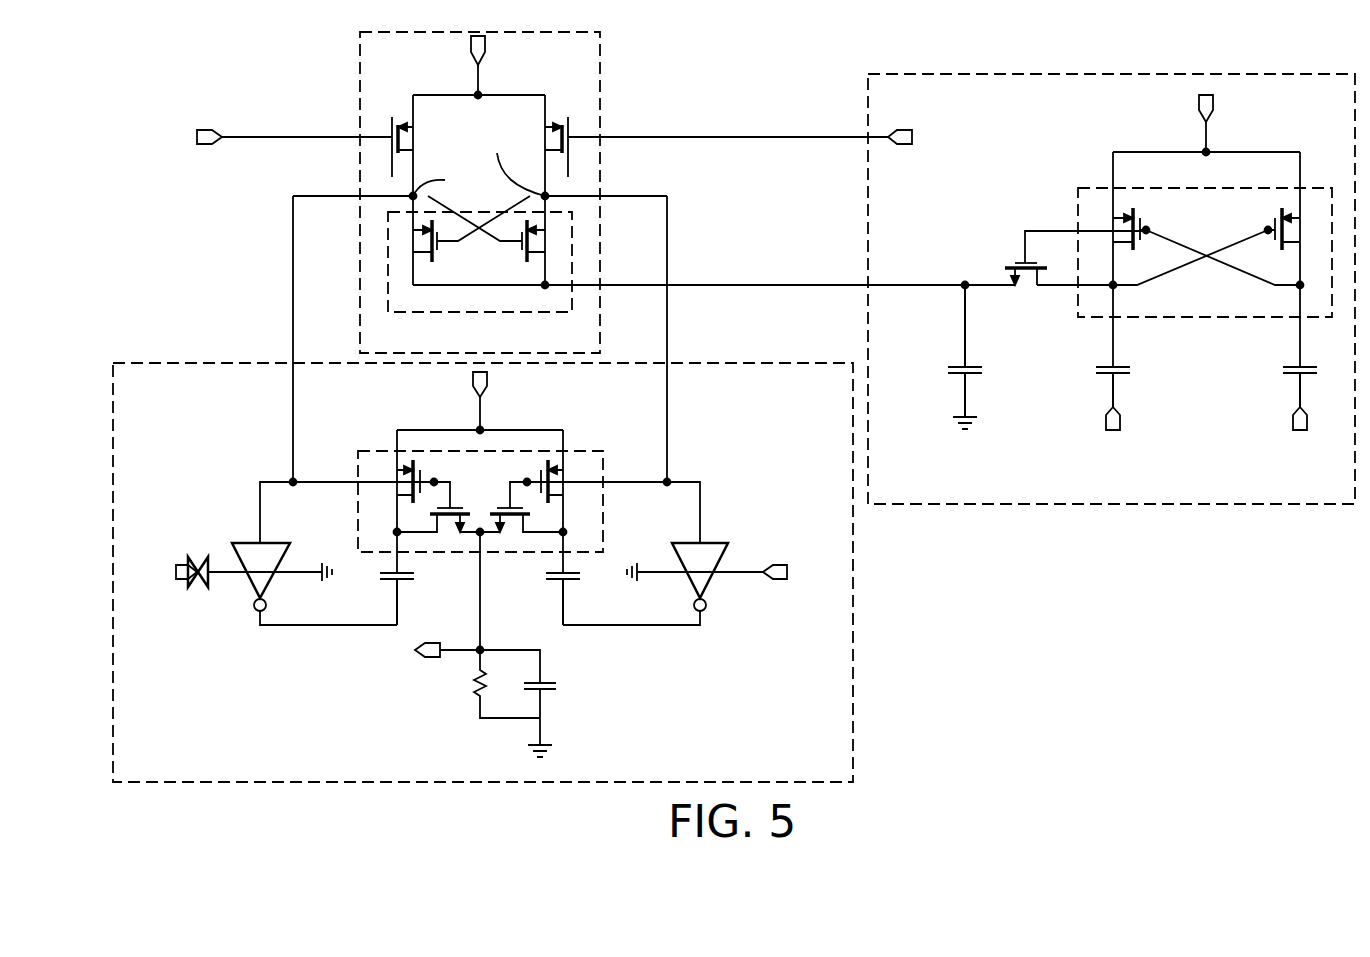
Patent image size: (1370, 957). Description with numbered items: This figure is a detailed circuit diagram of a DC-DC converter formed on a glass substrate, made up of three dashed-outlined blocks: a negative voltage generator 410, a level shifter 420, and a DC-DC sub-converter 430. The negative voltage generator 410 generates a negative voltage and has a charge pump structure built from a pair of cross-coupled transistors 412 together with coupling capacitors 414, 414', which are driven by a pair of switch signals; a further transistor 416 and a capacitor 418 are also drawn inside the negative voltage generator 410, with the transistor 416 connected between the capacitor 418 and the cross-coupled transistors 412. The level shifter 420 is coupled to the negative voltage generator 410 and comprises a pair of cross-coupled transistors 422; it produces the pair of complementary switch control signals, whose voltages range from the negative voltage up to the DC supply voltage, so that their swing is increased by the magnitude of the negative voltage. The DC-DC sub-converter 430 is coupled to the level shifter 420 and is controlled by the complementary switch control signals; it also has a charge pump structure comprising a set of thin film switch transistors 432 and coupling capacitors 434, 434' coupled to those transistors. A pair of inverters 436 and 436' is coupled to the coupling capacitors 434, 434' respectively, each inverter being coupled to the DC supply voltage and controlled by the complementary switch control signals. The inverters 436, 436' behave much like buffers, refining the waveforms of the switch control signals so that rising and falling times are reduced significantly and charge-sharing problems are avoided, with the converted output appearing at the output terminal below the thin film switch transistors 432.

The negative voltage generator 410 is at (868, 100).
The pair of cross-coupled transistors 412 is at (1100, 186).
The coupling capacitor 414 is at (1139, 403).
The coupling capacitor 414' is at (1270, 403).
The transistor 416 is at (1020, 262).
The capacitor 418 is at (973, 363).
The level shifter 420 is at (600, 53).
The pair of cross-coupled transistors 422 is at (416, 315).
The DC-DC sub-converter 430 is at (856, 608).
The thin film switch transistors 432 is at (583, 448).
The coupling capacitor 434 is at (429, 599).
The coupling capacitor 434' is at (533, 599).
The inverter 436 is at (259, 553).
The inverter 436' is at (698, 553).